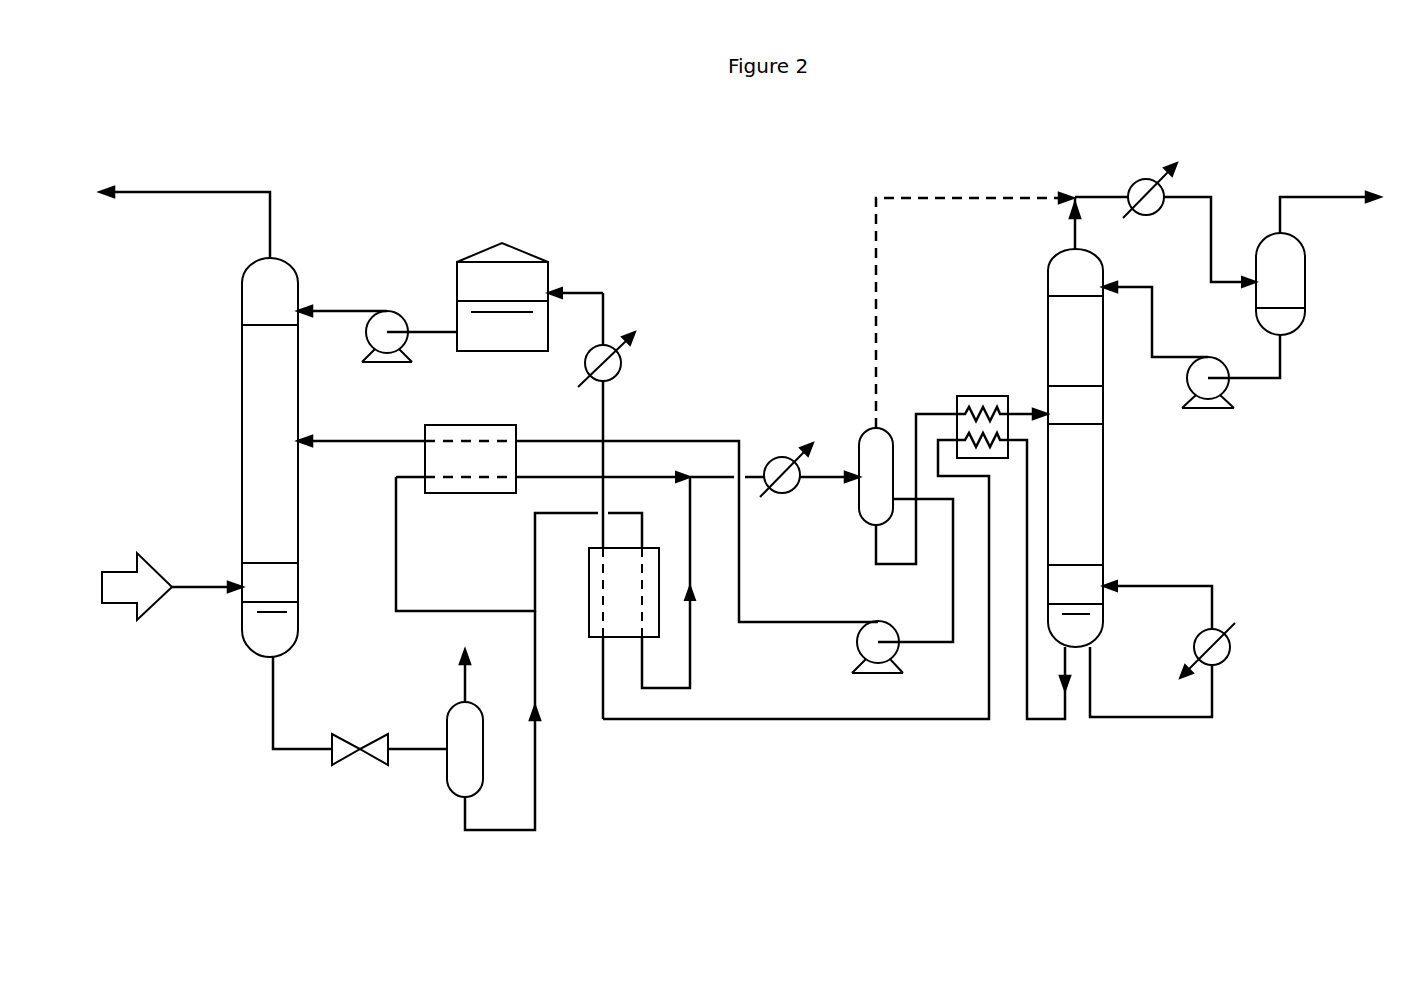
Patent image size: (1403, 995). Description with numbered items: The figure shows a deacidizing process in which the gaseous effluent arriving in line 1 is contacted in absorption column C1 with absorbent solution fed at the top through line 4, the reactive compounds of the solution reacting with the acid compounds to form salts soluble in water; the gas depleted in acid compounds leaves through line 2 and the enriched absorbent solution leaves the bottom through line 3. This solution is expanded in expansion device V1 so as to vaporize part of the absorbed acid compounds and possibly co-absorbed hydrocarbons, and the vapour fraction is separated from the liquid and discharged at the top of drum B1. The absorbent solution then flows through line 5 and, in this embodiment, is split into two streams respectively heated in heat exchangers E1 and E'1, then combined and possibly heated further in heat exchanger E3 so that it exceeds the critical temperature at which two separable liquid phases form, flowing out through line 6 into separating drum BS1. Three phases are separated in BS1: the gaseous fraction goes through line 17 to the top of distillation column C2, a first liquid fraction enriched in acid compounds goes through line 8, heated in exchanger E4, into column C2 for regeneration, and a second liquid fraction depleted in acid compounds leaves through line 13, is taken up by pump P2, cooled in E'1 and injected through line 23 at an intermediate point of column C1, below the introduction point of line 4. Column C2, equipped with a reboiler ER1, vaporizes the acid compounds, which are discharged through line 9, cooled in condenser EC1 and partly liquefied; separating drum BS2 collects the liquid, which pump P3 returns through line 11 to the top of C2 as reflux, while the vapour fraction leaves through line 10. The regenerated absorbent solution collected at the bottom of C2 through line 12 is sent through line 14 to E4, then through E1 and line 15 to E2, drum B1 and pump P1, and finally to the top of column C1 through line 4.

The line 1 is at (198, 588).
The line 2 is at (196, 192).
The line 3 is at (299, 753).
The line 4 is at (340, 311).
The line 5 is at (538, 773).
The line 6 is at (823, 478).
The line 8 is at (937, 413).
The line 9 is at (1072, 228).
The line 10 is at (1312, 197).
The line 11 is at (1158, 323).
The line 12 is at (1048, 720).
The line 13 is at (952, 587).
The heat exchange stream 14 is at (812, 722).
The recycle stream to B1 15 is at (608, 423).
The line 17 is at (877, 308).
The line 23 is at (365, 443).
The absorption column C1 is at (242, 462).
The distillation column C2 is at (1103, 475).
The drum B1 is at (504, 353).
The pump P1 is at (409, 354).
The pump P2 is at (877, 664).
The pump P3 is at (1231, 388).
The heat exchanger E1 is at (545, 580).
The heat exchanger E'1 is at (470, 477).
The exchanger E2 is at (603, 337).
The heat exchanger E3 is at (751, 462).
The exchanger E4 is at (982, 412).
The condenser EC1 is at (1165, 214).
The reboiler ER1 is at (1187, 649).
The separating drum BS1 is at (857, 522).
The separating drum BS2 is at (1307, 290).
The expansion device V1 is at (389, 764).